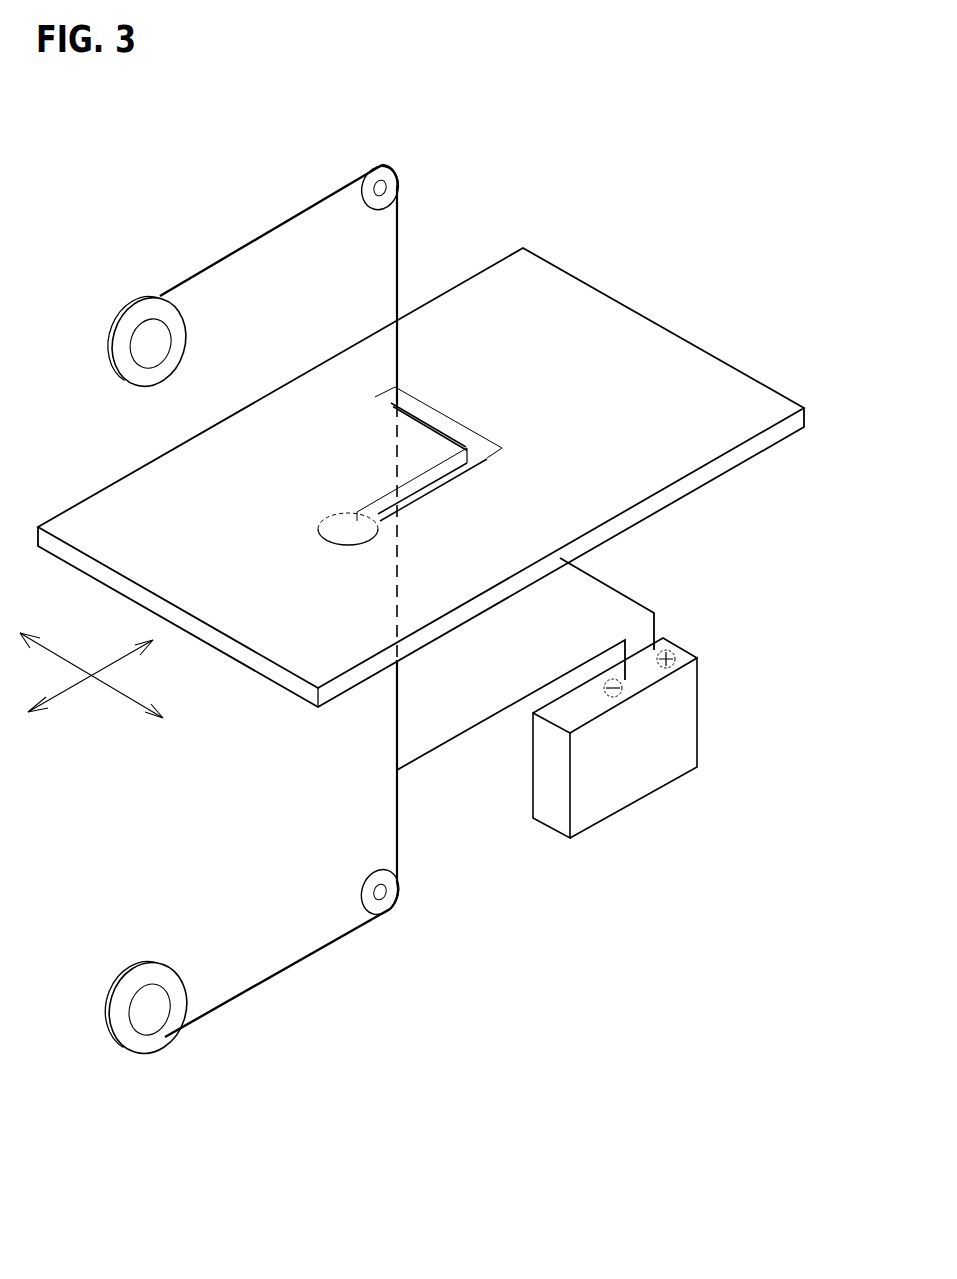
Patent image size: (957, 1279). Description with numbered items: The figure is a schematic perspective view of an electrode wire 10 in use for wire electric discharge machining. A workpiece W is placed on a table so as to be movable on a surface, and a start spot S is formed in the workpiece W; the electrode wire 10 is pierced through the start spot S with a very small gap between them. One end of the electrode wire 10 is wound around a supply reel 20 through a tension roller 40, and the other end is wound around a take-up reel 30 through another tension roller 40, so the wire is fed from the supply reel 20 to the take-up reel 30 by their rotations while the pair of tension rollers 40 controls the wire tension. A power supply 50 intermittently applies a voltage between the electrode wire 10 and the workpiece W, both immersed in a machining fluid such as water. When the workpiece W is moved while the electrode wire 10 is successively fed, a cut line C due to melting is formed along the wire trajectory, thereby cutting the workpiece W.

The electrode wire 10 is at (266, 235).
The supply reel 20 is at (133, 303).
The take-up reel 30 is at (168, 1041).
The tension roller 40 is at (401, 173).
The power supply 50 is at (682, 702).
The workpiece W is at (588, 280).
The cut line C is at (453, 428).
The start spot S is at (332, 513).